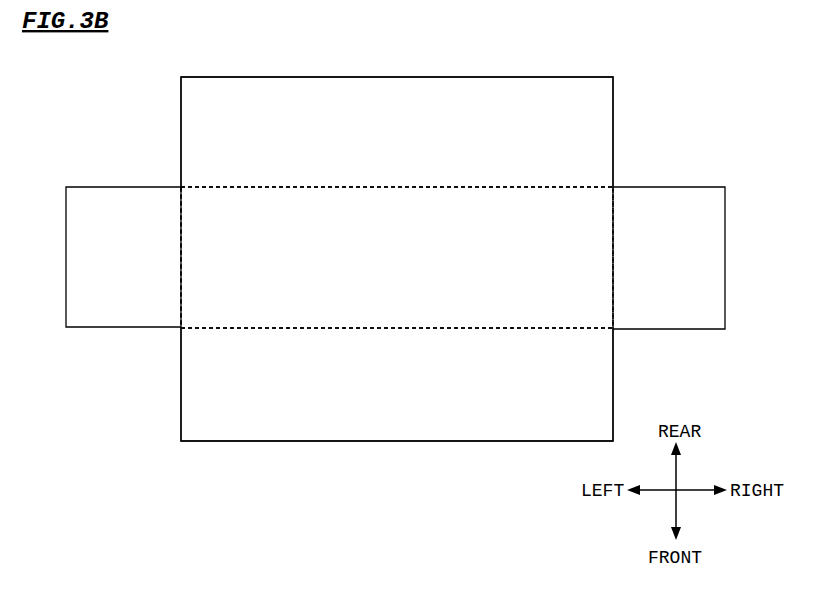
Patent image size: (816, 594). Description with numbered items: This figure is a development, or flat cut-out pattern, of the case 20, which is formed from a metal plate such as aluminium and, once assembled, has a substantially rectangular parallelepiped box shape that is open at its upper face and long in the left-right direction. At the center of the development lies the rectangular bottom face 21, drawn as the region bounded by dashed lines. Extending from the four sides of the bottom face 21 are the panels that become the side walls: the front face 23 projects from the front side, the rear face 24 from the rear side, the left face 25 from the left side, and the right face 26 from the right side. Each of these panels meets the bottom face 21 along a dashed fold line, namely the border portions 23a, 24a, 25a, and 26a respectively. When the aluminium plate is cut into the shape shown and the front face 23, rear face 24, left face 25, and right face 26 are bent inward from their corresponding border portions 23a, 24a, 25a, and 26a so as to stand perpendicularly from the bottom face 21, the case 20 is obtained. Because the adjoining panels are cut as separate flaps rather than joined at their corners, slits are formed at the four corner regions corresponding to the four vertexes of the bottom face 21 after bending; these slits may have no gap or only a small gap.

The case 20 is at (633, 104).
The bottom face 21 is at (468, 200).
The front face 23 is at (347, 431).
The border portion 23a is at (412, 330).
The rear face 24 is at (422, 88).
The border portion 24a is at (374, 187).
The left face 25 is at (124, 200).
The border portion 25a is at (181, 278).
The right face 26 is at (662, 198).
The border portion 26a is at (650, 252).